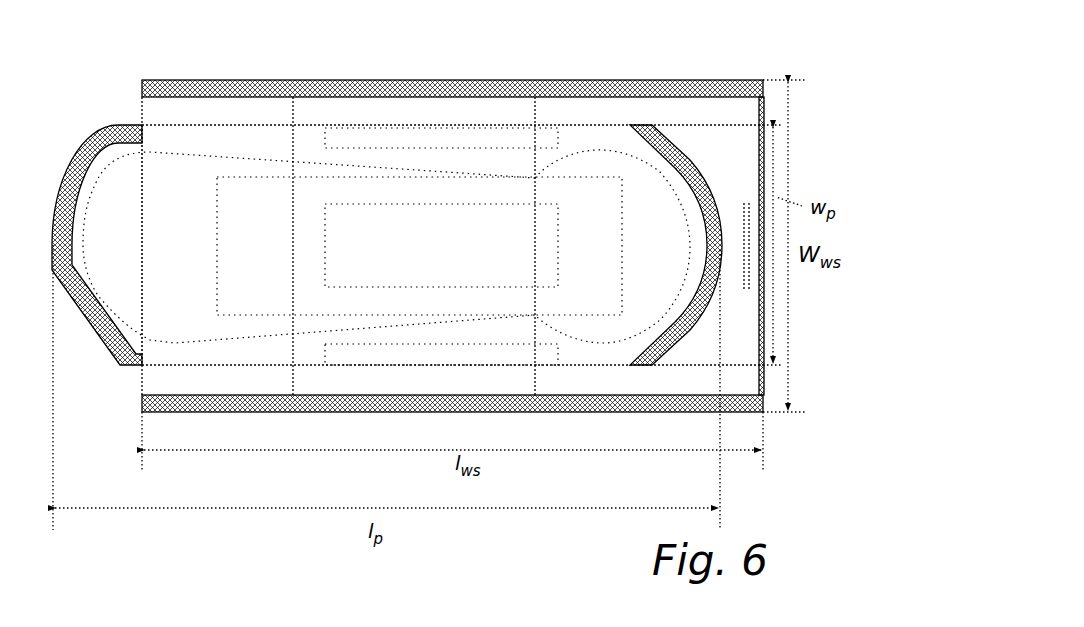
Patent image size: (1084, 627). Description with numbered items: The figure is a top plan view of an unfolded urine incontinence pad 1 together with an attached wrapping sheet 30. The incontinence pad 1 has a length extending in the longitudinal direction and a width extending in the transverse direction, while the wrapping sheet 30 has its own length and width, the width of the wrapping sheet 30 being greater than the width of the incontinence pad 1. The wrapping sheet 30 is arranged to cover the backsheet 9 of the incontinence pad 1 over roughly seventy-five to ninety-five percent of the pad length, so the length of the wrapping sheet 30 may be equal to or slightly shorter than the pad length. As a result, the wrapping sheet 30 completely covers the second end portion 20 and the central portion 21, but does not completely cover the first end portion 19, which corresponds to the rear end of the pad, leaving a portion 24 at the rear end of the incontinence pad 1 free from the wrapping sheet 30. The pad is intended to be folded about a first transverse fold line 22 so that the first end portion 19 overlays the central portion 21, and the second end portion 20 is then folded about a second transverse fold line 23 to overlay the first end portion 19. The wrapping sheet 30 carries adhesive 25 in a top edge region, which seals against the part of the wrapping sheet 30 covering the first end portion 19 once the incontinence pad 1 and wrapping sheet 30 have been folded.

The incontinence pad 1 is at (92, 112).
The backsheet 9 is at (238, 345).
The first end portion 19 is at (248, 140).
The second end portion 20 is at (605, 133).
The central portion 21 is at (413, 160).
The first transverse fold line 22 is at (297, 142).
The second transverse fold line 23 is at (535, 193).
The portion free from the wrapping sheet 24 is at (113, 292).
The adhesive 25 is at (748, 203).
The wrapping sheet 30 is at (204, 108).